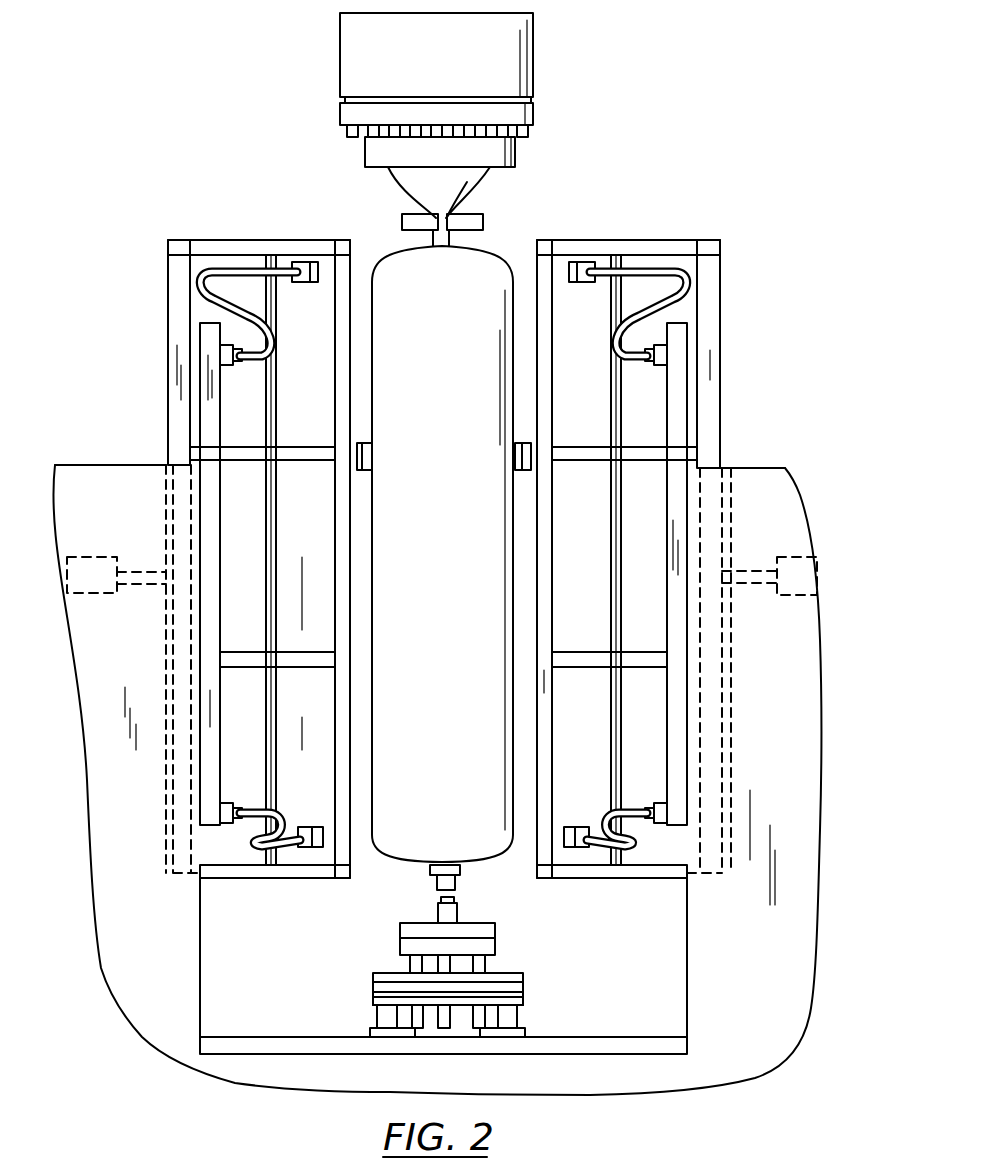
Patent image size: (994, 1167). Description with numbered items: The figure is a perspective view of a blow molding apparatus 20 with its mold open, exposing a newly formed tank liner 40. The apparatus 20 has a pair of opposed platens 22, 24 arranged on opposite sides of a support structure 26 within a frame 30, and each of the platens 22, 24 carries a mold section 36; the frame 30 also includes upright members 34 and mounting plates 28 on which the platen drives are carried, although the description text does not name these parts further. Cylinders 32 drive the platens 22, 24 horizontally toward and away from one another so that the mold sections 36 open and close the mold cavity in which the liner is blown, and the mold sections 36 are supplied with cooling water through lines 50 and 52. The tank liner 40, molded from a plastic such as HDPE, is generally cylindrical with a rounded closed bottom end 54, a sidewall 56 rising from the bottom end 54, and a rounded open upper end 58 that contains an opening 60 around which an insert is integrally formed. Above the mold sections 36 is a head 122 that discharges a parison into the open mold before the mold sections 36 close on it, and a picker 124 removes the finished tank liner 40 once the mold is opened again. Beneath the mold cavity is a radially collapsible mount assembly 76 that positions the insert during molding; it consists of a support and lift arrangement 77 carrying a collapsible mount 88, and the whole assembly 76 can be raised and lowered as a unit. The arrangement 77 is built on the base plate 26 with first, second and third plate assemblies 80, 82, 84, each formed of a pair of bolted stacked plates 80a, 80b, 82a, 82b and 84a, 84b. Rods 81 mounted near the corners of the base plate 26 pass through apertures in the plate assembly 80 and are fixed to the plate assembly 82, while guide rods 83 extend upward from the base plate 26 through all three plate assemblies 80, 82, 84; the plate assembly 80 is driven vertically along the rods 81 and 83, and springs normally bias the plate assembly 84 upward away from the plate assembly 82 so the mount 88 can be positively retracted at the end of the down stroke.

The blow molding apparatus 20 is at (431, 547).
The platen 22 is at (736, 428).
The platen 24 is at (156, 439).
The support structure 26 is at (101, 972).
The mounting plate 28 is at (207, 341).
The frame 30 is at (778, 872).
The cylinder 32 is at (146, 590).
The frame post 34 is at (173, 255).
The mold section 36 is at (277, 736).
The tank liner 40 is at (459, 386).
The cooling water line 50 is at (218, 268).
The cooling water line 52 is at (250, 846).
The bottom end 54 is at (497, 251).
The sidewall 56 is at (381, 589).
The upper end 58 is at (413, 861).
The opening 60 is at (431, 882).
The radially collapsible mount assembly 76 is at (349, 993).
The support and lift arrangement 77 is at (364, 1002).
The first plate assembly 80 is at (508, 1005).
The stacked plate 80a is at (525, 976).
The stacked plate 80b is at (525, 995).
The rod 81 is at (368, 1013).
The second plate assembly 82 is at (469, 989).
The stacked plate 82a is at (374, 977).
The stacked plate 82b is at (374, 987).
The guide rod 83 is at (413, 1029).
The third plate assembly 84 is at (444, 938).
The stacked plate 84a is at (400, 926).
The stacked plate 84b is at (400, 946).
The collapsible mount 88 is at (465, 909).
The head 122 is at (541, 107).
The picker 124 is at (478, 219).